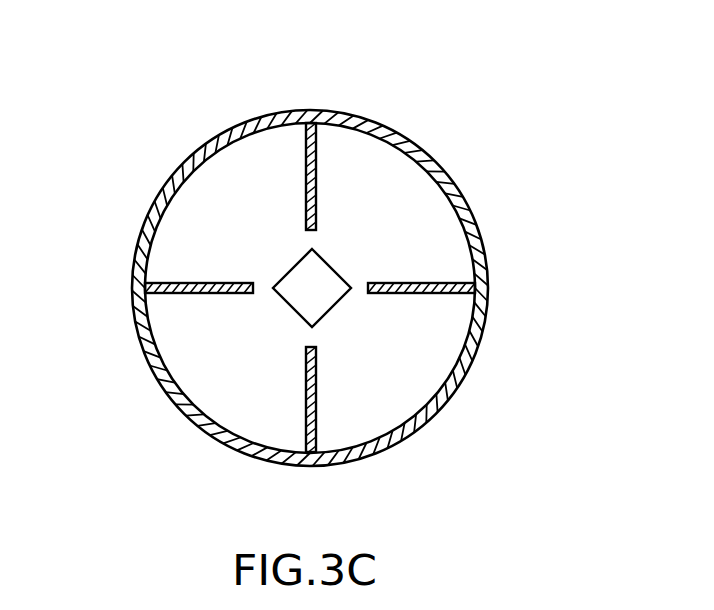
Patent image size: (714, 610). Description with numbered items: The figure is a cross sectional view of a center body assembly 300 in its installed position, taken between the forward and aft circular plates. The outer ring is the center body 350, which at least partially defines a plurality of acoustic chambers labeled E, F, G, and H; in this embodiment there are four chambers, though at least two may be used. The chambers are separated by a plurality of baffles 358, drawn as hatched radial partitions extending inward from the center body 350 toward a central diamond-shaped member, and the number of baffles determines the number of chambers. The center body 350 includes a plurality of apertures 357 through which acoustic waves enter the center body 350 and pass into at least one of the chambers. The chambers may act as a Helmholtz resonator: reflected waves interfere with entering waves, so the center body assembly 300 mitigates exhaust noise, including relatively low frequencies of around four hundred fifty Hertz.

The center body assembly 300 is at (188, 90).
The center body 350 is at (423, 145).
The apertures 357 is at (163, 188).
The plurality of baffles 358 is at (447, 293).